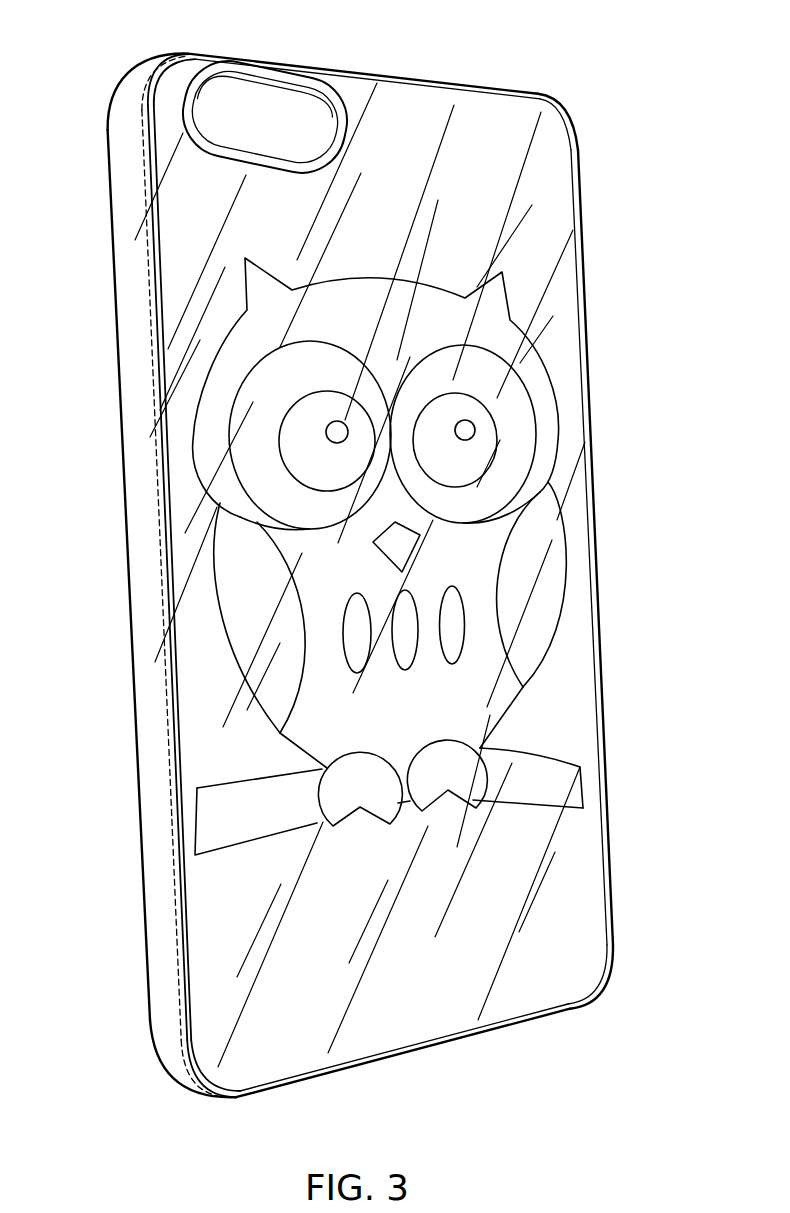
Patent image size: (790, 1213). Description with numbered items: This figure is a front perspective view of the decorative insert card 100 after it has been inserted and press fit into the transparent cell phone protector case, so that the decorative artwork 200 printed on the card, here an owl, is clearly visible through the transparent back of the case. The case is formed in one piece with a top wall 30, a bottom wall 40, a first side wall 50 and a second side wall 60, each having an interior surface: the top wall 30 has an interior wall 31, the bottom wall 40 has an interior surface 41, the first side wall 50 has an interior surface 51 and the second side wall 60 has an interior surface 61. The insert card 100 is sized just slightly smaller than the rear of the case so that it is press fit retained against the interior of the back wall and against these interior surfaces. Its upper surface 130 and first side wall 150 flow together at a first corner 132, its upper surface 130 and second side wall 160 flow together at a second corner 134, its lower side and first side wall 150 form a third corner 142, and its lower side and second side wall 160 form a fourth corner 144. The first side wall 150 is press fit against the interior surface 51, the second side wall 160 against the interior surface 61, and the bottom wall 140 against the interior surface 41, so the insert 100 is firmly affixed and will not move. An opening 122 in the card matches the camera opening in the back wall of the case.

The decorative insert card 100 is at (295, 233).
The opening 122 is at (292, 140).
The decorative artwork 200 is at (483, 557).
The top wall 30 is at (364, 82).
The interior wall 31 is at (491, 90).
The upper surface 130 is at (409, 84).
The first corner 132 is at (185, 62).
The second corner 134 is at (544, 100).
The second side wall 160 is at (577, 214).
The second side wall 60 is at (615, 547).
The interior surface 61 is at (596, 668).
The fourth corner 144 is at (604, 974).
The bottom wall 40 is at (403, 1067).
The interior surface 41 is at (528, 1010).
The bottom wall 140 is at (410, 1045).
The third corner 142 is at (223, 1084).
The first side wall 50 is at (121, 572).
The interior surface 51 is at (172, 603).
The first side wall 150 is at (152, 268).